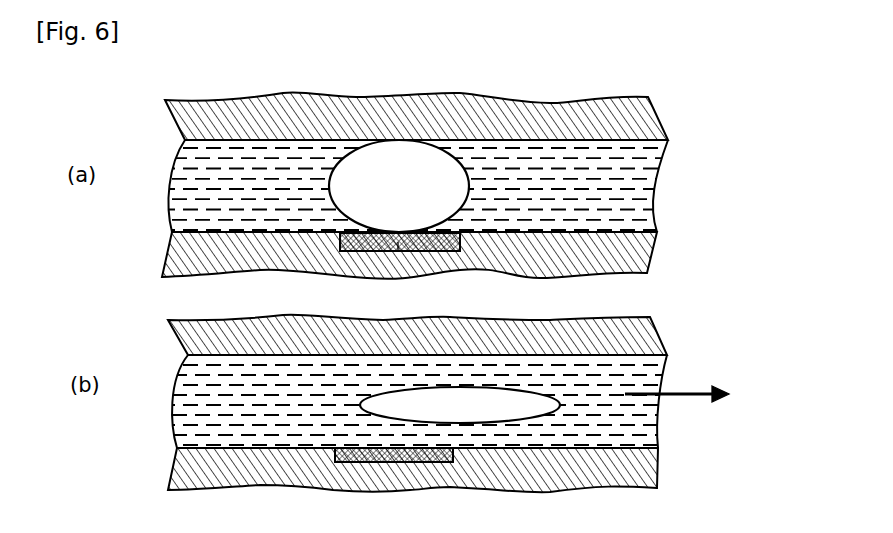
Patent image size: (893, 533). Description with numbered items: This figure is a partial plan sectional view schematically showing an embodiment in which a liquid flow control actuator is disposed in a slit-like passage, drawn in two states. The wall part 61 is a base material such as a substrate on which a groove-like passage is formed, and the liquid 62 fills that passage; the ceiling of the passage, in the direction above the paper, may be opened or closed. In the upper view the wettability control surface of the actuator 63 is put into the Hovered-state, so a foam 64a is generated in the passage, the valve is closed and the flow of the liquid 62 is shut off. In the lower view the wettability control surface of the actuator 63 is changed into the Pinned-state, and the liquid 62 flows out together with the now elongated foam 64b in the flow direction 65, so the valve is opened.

The wall part 61 is at (286, 108).
The liquid 62 is at (190, 175).
The actuator 63 is at (417, 272).
The foam 64a is at (410, 167).
The foam 64b is at (498, 417).
The flow direction 65 is at (683, 399).